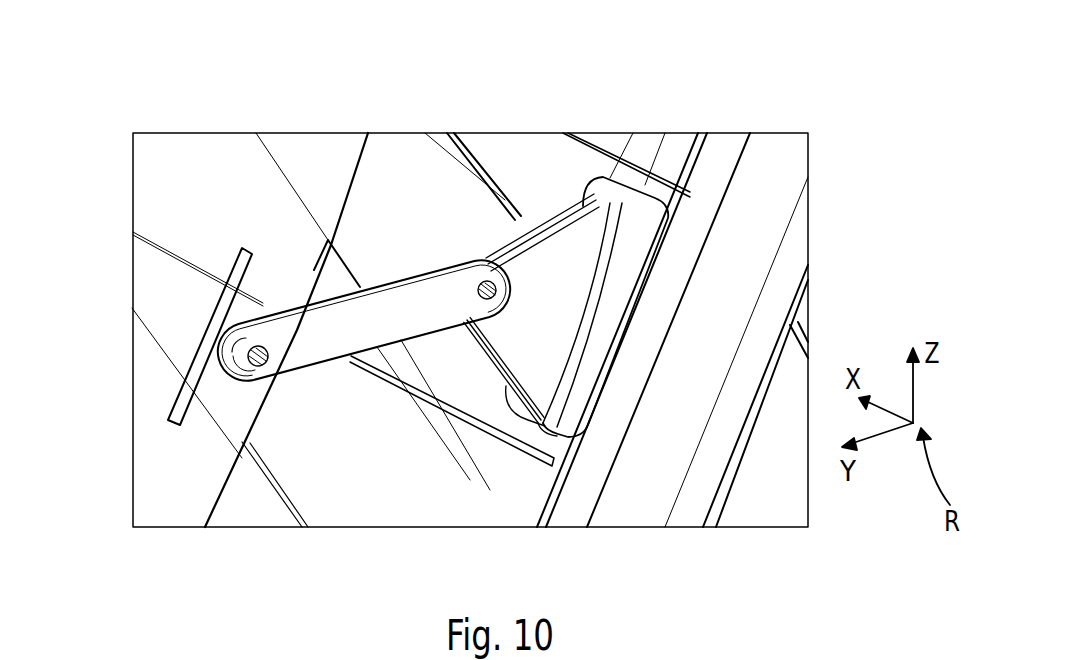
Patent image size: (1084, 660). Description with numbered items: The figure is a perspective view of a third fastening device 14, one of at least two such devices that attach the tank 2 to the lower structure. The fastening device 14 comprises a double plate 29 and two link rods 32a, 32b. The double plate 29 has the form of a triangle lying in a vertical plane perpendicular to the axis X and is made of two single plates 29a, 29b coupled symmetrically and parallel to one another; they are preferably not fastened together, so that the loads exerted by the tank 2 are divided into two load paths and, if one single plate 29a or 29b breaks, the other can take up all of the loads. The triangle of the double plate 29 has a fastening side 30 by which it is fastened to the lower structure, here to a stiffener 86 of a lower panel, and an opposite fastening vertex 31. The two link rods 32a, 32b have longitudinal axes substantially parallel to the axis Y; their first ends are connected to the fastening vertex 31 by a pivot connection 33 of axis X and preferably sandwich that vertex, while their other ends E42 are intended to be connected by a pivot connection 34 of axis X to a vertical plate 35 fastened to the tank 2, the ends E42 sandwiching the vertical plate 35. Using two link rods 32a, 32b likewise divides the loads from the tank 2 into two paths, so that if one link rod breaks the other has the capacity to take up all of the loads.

The tank 2 is at (155, 522).
The fastening device 14 is at (325, 165).
The double plate 29 is at (556, 272).
The first single plate 29a is at (557, 273).
The second single plate 29b is at (598, 198).
The fastening side 30 is at (603, 303).
The fastening vertex 31 is at (477, 335).
The first link rod 32a is at (383, 275).
The second link rod 32b is at (345, 338).
The pivot connection 33 is at (484, 280).
The pivot connection 34 is at (272, 330).
The vertical plate 35 is at (210, 393).
The stiffener 86 is at (657, 437).
The end of the link rods E42 is at (250, 355).